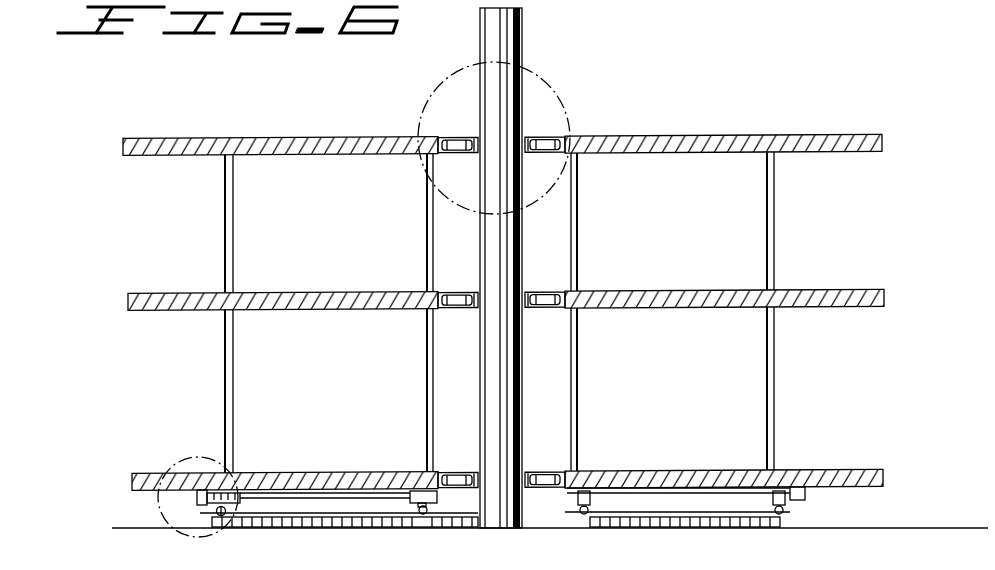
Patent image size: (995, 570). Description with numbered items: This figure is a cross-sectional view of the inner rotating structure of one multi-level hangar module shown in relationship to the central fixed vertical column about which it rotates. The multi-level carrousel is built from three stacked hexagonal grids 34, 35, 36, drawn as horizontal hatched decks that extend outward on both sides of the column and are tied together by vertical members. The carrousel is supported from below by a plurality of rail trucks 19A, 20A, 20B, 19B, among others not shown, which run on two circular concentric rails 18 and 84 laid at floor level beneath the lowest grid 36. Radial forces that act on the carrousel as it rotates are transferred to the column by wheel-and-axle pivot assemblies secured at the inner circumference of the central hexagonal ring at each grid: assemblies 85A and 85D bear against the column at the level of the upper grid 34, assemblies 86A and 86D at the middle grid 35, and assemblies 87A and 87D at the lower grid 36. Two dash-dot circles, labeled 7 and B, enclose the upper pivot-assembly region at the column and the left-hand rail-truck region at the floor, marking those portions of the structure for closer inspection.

The detail circle (FIG. 7 area) 7 is at (425, 100).
The detail circle B is at (178, 460).
The hexagonal grid 34 is at (886, 139).
The hexagonal grid 35 is at (888, 296).
The hexagonal grid 36 is at (889, 476).
The wheel-and-axle pivot assembly 85A is at (453, 141).
The wheel-and-axle pivot assembly 85D is at (552, 141).
The wheel-and-axle pivot assembly 86A is at (453, 296).
The wheel-and-axle pivot assembly 86D is at (552, 296).
The wheel-and-axle pivot assembly 87A is at (458, 476).
The wheel-and-axle pivot assembly 87D is at (552, 476).
The circular concentric rail 18 is at (217, 514).
The rail truck 19A is at (206, 508).
The rail truck 19B is at (788, 505).
The rail truck 20A is at (412, 503).
The rail truck 20B is at (590, 505).
The circular concentric rail 84 is at (430, 521).